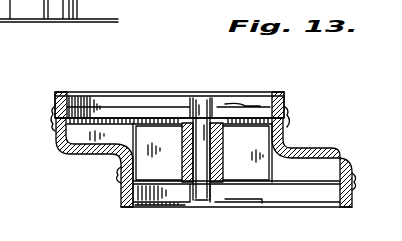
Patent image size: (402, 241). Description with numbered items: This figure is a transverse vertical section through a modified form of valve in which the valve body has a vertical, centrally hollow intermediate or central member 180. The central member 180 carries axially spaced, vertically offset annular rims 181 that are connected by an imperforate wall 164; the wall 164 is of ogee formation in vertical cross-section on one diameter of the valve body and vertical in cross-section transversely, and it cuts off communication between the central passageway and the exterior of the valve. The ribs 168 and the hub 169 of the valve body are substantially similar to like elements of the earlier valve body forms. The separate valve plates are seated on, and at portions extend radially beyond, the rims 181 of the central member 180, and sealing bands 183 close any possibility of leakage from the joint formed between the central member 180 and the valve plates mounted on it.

The wall 164 is at (95, 151).
The ribs 168 is at (148, 143).
The hub 169 is at (222, 160).
The central member 180 is at (328, 148).
The annular rims 181 is at (58, 141).
The sealing bands 183 is at (53, 117).